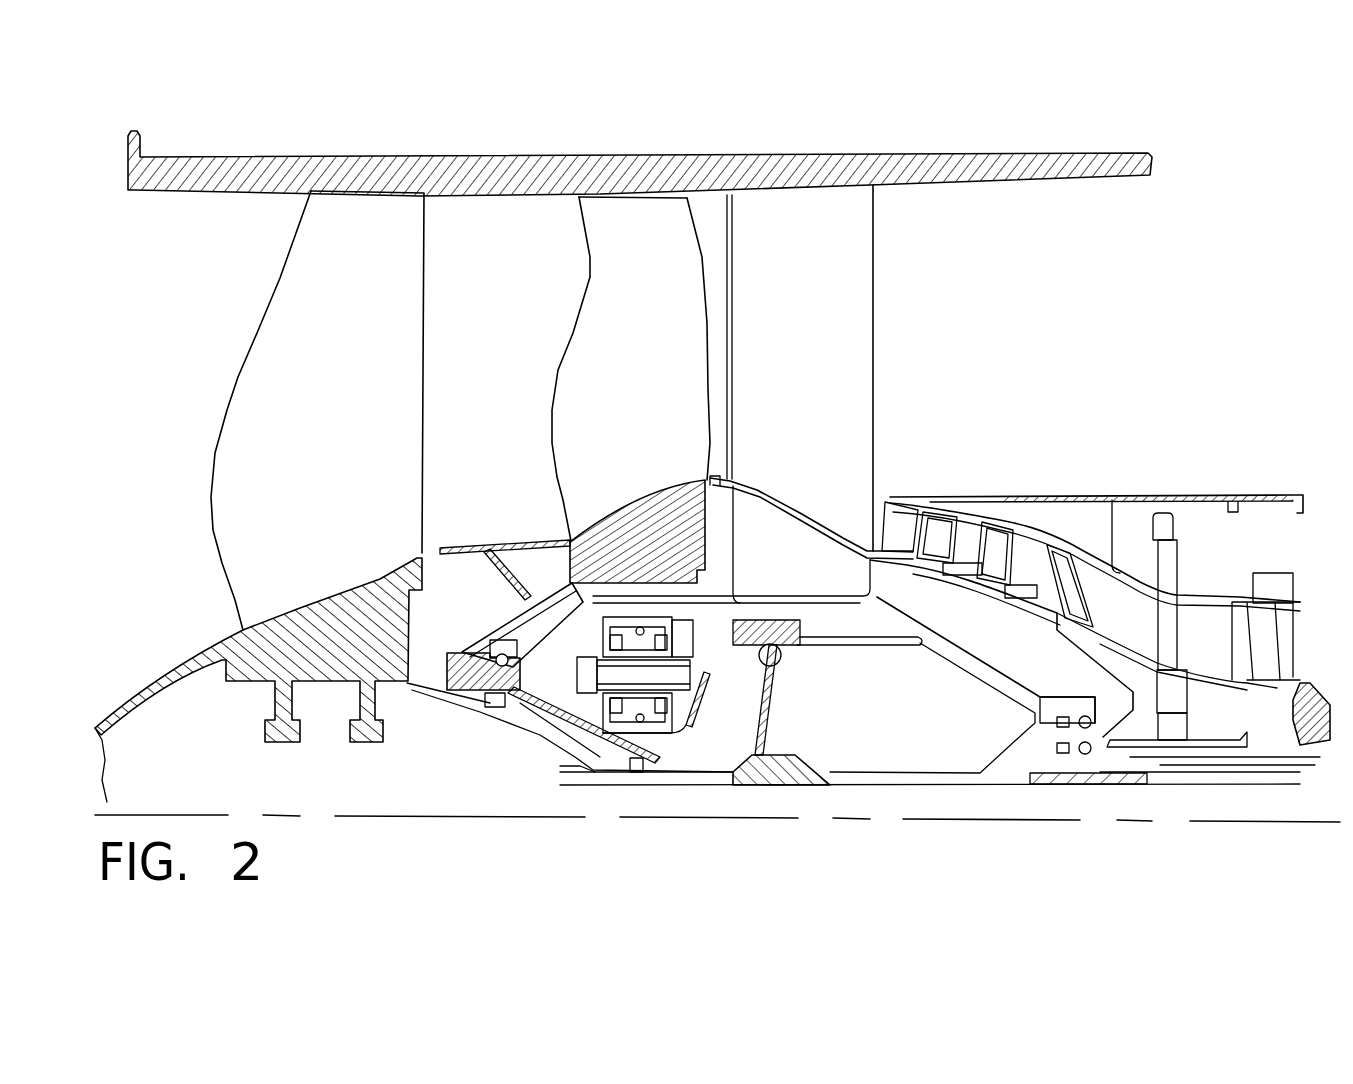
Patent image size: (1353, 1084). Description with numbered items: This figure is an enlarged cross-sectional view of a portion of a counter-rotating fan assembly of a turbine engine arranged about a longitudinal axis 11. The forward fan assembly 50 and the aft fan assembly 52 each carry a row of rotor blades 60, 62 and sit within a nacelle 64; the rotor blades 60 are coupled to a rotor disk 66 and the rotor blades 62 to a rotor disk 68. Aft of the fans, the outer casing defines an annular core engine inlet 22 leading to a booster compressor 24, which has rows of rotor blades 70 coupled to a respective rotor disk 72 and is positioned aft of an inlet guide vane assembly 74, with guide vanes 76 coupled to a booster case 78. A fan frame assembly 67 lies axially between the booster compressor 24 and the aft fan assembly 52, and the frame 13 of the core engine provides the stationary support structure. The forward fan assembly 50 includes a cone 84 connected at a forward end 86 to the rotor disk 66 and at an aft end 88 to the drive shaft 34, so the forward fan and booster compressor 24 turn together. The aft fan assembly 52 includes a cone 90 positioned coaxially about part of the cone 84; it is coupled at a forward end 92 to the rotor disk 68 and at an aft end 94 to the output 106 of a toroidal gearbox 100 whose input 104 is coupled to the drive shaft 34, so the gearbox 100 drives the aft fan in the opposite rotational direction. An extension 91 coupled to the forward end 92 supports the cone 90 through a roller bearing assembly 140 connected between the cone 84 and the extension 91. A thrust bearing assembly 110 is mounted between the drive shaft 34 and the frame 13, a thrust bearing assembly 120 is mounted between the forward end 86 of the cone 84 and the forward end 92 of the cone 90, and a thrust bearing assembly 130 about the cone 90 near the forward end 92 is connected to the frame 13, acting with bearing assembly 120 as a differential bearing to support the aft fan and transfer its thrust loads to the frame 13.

The longitudinal axis 11 is at (967, 822).
The frame 13 is at (993, 677).
The annular core engine inlet 22 is at (877, 503).
The booster compressor 24 is at (988, 452).
The drive shaft 34 is at (977, 783).
The forward fan assembly 50 is at (205, 296).
The aft fan assembly 52 is at (512, 307).
The rotor blades 60 is at (317, 410).
The rotor blades 62 is at (631, 369).
The nacelle 64 is at (1045, 150).
The rotor disk 66 is at (283, 738).
The fan frame assembly 67 is at (853, 300).
The rotor disk 68 is at (612, 532).
The rotor blades 70 is at (943, 515).
The rotor disk 72 is at (987, 588).
The inlet guide vane assembly 74 is at (893, 532).
The guide vanes 76 is at (1045, 560).
The booster case 78 is at (1100, 533).
The cone 84 is at (530, 737).
The forward end 86 is at (467, 737).
The aft end 88 is at (602, 778).
The cone 90 is at (567, 648).
The extension 91 is at (573, 738).
The forward end 92 is at (450, 687).
The aft end 94 is at (590, 615).
The gearbox 100 is at (700, 660).
The input 104 is at (662, 725).
The output 106 is at (657, 637).
The thrust bearing assembly 110 is at (797, 658).
The thrust bearing assembly 120 is at (473, 703).
The thrust bearing assembly 130 is at (480, 662).
The roller bearing assembly 140 is at (650, 768).